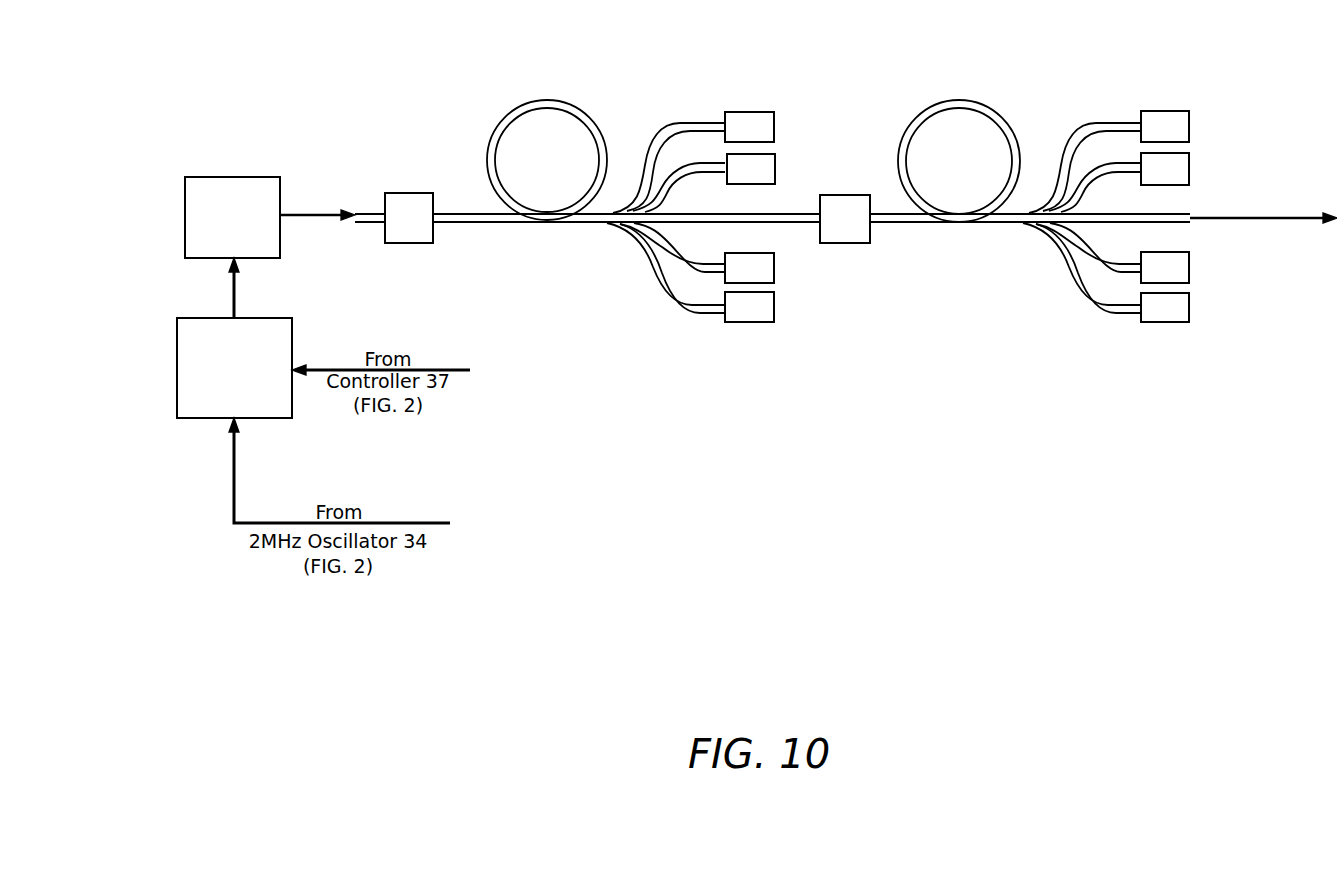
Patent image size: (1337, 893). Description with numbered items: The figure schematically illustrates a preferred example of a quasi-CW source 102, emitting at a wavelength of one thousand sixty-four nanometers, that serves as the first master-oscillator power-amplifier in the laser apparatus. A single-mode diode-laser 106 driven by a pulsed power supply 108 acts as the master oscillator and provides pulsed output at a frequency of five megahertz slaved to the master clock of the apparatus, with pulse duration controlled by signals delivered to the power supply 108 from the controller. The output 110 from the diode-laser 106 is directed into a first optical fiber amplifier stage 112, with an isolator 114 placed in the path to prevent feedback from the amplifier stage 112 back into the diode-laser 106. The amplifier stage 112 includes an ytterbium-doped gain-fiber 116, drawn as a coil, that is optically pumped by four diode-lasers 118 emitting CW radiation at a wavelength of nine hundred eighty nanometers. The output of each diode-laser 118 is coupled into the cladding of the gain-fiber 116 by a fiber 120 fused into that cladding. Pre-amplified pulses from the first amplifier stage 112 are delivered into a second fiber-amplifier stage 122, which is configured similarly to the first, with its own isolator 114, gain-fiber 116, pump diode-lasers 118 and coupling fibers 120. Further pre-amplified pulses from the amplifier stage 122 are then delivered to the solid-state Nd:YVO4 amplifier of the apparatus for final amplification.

The quasi-CW 1064-nm source 102 is at (975, 620).
The single-mode diode-laser 106 is at (263, 178).
The pulsed power supply 108 is at (285, 323).
The seed laser beam 110 is at (322, 215).
The first optical fiber amplifier stage 112 is at (645, 375).
The isolator 114 is at (430, 238).
The ytterbium-doped gain-fiber 116 is at (553, 98).
The diode-lasers 118 is at (758, 110).
The fiber 120 is at (678, 125).
The second fiber-amplifier stage 122 is at (1044, 410).